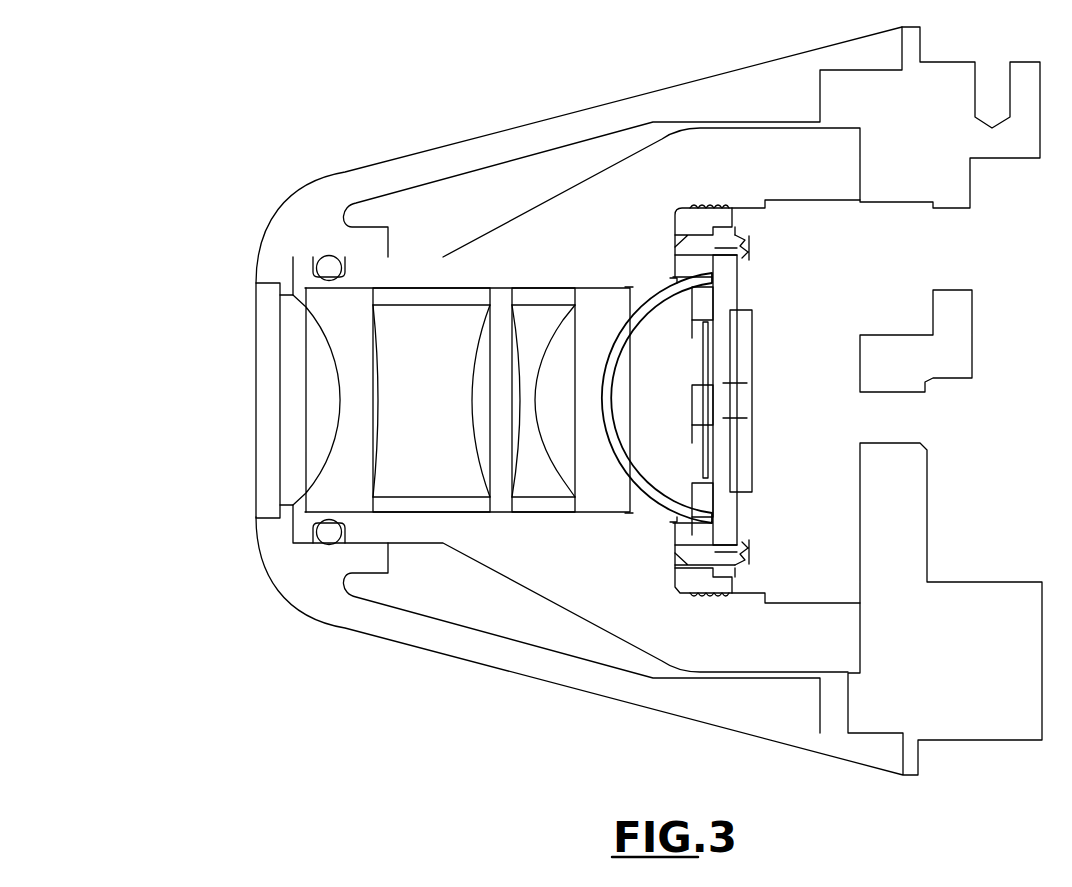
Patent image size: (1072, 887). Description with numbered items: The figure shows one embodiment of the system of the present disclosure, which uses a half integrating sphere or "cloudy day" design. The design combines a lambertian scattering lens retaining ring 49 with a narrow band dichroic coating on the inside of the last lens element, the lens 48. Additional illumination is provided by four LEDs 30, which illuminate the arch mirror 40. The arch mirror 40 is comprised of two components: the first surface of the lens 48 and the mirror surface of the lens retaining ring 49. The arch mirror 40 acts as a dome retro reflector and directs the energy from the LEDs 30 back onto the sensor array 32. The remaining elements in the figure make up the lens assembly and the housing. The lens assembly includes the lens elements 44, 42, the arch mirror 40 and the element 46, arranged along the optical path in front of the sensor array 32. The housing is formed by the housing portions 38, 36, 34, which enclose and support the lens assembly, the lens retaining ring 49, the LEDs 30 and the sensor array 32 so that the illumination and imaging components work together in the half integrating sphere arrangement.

The LEDs 30 is at (716, 390).
The sensor array 32 is at (751, 433).
The housing 34 is at (1003, 716).
The housing 36 is at (781, 724).
The housing 38 is at (697, 652).
The arch mirror 40 is at (646, 504).
The lens assembly 42 is at (494, 504).
The lens assembly 44 is at (323, 489).
The lens assembly 46 is at (243, 391).
The lens 48 is at (577, 334).
The lens retaining ring 49 is at (637, 290).